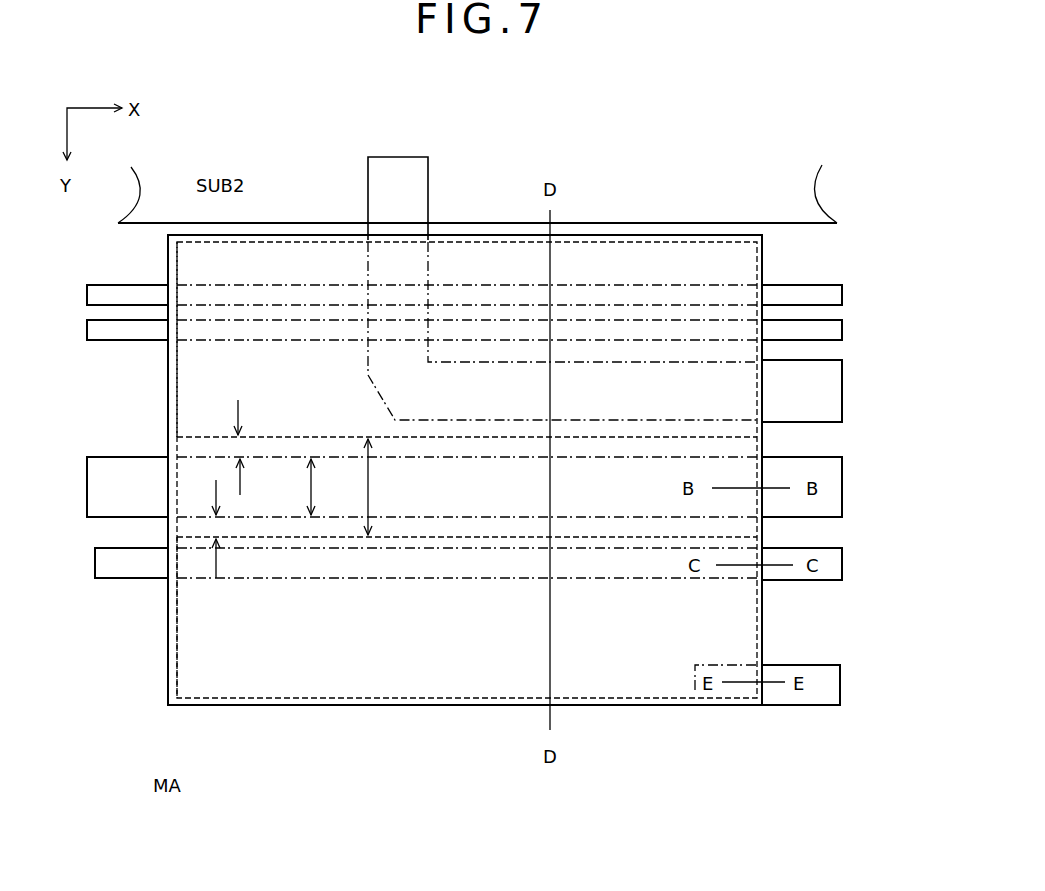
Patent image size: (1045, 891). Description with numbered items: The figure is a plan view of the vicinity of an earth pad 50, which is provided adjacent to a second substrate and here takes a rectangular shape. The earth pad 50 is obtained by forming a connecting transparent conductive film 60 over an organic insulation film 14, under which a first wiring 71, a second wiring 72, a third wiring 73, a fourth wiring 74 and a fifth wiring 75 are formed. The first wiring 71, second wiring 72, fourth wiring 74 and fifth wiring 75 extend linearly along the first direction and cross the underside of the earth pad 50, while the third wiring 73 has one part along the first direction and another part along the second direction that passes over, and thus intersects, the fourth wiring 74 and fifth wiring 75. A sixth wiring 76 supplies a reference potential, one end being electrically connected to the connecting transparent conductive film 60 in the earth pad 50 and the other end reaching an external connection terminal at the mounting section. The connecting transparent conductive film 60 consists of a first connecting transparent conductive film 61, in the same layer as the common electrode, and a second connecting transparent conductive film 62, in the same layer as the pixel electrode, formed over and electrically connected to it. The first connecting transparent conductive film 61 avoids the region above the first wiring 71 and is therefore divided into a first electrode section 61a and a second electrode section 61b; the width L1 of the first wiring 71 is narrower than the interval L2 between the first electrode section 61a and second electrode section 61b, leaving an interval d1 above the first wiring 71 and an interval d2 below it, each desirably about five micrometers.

The earth pad 50 is at (336, 710).
The organic insulation film 14 is at (465, 543).
The connecting transparent conductive film 60 is at (697, 167).
The first connecting transparent conductive film 61 is at (660, 240).
The first electrode section 61a is at (168, 367).
The second electrode section 61b is at (168, 655).
The second connecting transparent conductive film 62 is at (605, 235).
The first wiring 71 is at (845, 487).
The second wiring 72 is at (845, 560).
The third wiring 73 is at (845, 393).
The fourth wiring 74 is at (845, 330).
The fifth wiring 75 is at (845, 294).
The sixth wiring 76 is at (843, 685).
The interval between the upper end of the first wiring and the lower end of the firs d1 is at (240, 444).
The interval between the lower end of the first wiring and the upper end of the seco d2 is at (215, 527).
The width of the first wiring L1 is at (323, 487).
The interval between the first electrode section and the second electrode section L2 is at (382, 487).